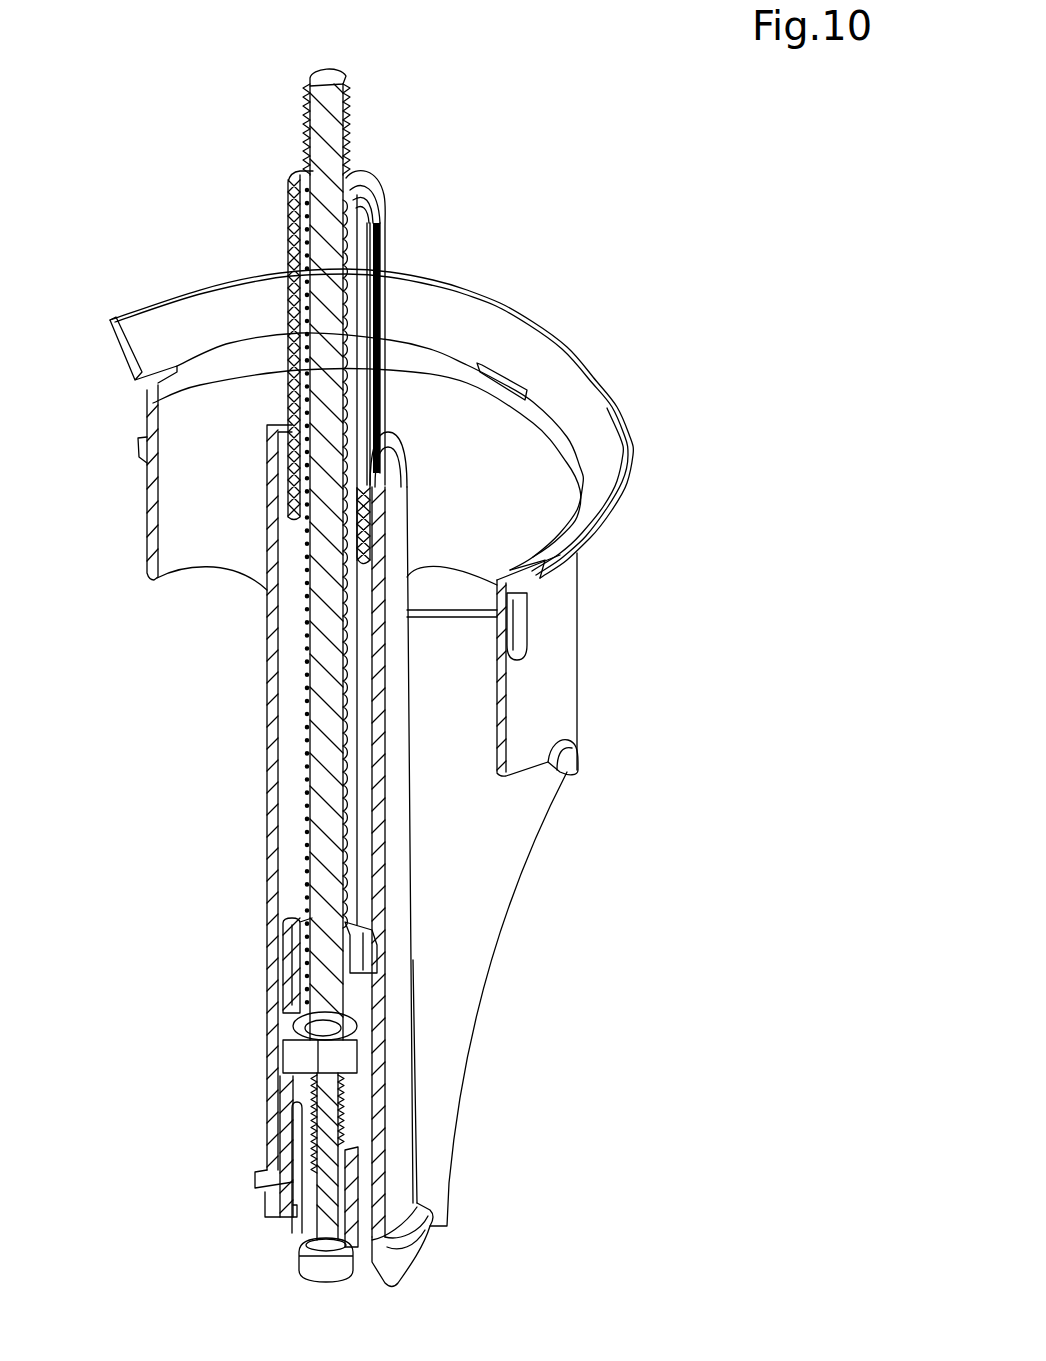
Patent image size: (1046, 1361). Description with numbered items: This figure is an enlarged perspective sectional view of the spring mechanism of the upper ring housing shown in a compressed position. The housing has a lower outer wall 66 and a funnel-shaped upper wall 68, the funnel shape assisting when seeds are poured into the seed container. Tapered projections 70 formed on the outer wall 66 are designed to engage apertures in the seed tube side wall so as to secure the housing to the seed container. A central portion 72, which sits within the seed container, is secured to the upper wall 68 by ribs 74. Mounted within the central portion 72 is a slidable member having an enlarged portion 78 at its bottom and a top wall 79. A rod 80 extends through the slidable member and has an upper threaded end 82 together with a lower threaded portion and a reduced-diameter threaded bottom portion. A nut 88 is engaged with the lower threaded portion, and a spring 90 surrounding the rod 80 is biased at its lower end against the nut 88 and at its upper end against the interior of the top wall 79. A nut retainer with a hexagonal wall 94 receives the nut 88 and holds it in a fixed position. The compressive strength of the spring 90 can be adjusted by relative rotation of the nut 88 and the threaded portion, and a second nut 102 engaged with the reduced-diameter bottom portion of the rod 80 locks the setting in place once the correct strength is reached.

The lower outer wall 66 is at (553, 678).
The upper wall 68 is at (582, 380).
The projections 70 is at (140, 442).
The central portion 72 is at (400, 1037).
The ribs 74 is at (484, 907).
The enlarged portion 78 is at (290, 480).
The top wall 79 is at (366, 182).
The rod 80 is at (325, 650).
The upper threaded end 82 is at (353, 131).
The nut 88 is at (300, 1060).
The spring 90 is at (357, 833).
The hexagonal wall 94 is at (295, 997).
The second nut 102 is at (322, 1270).